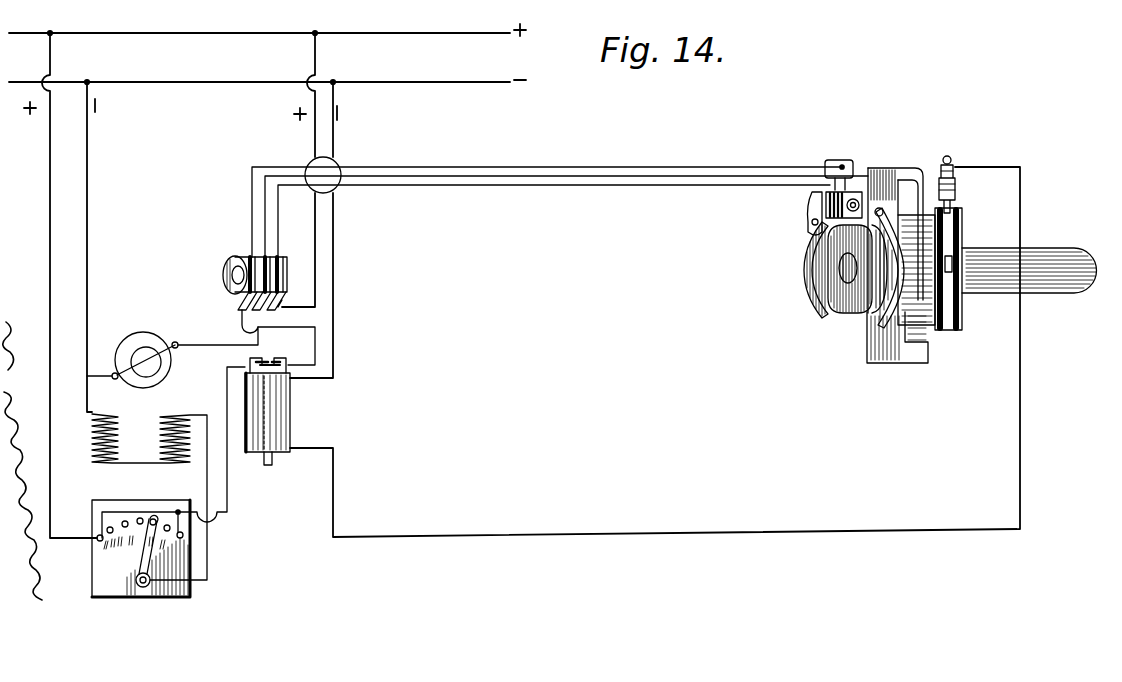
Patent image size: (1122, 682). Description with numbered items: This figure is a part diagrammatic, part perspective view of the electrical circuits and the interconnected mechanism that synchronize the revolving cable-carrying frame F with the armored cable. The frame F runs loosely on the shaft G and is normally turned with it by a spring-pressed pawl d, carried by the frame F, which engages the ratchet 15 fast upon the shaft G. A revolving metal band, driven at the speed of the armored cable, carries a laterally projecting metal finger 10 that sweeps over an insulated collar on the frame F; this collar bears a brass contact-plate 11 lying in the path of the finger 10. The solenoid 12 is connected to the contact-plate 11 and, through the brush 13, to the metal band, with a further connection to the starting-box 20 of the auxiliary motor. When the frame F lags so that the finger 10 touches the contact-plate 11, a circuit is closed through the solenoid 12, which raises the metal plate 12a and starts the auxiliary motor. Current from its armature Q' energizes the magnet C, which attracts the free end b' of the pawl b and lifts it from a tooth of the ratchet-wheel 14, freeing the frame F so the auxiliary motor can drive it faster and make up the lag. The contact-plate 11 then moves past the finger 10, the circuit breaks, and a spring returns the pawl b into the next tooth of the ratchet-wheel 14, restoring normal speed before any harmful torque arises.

The armature Q' is at (132, 345).
The starting-box 20 is at (168, 482).
The solenoid 12 is at (292, 418).
The metal plate 12a is at (302, 350).
The magnet C is at (856, 192).
The free end of pawl b' is at (799, 213).
The frame F is at (895, 175).
The brush 13 is at (957, 163).
The ratchet-wheel 14 is at (857, 269).
The pawl b is at (797, 270).
The ratchet 15 is at (866, 322).
The pawl d is at (909, 258).
The metal finger 10 is at (950, 262).
The contact-plate 11 is at (955, 268).
The shaft G is at (1053, 262).